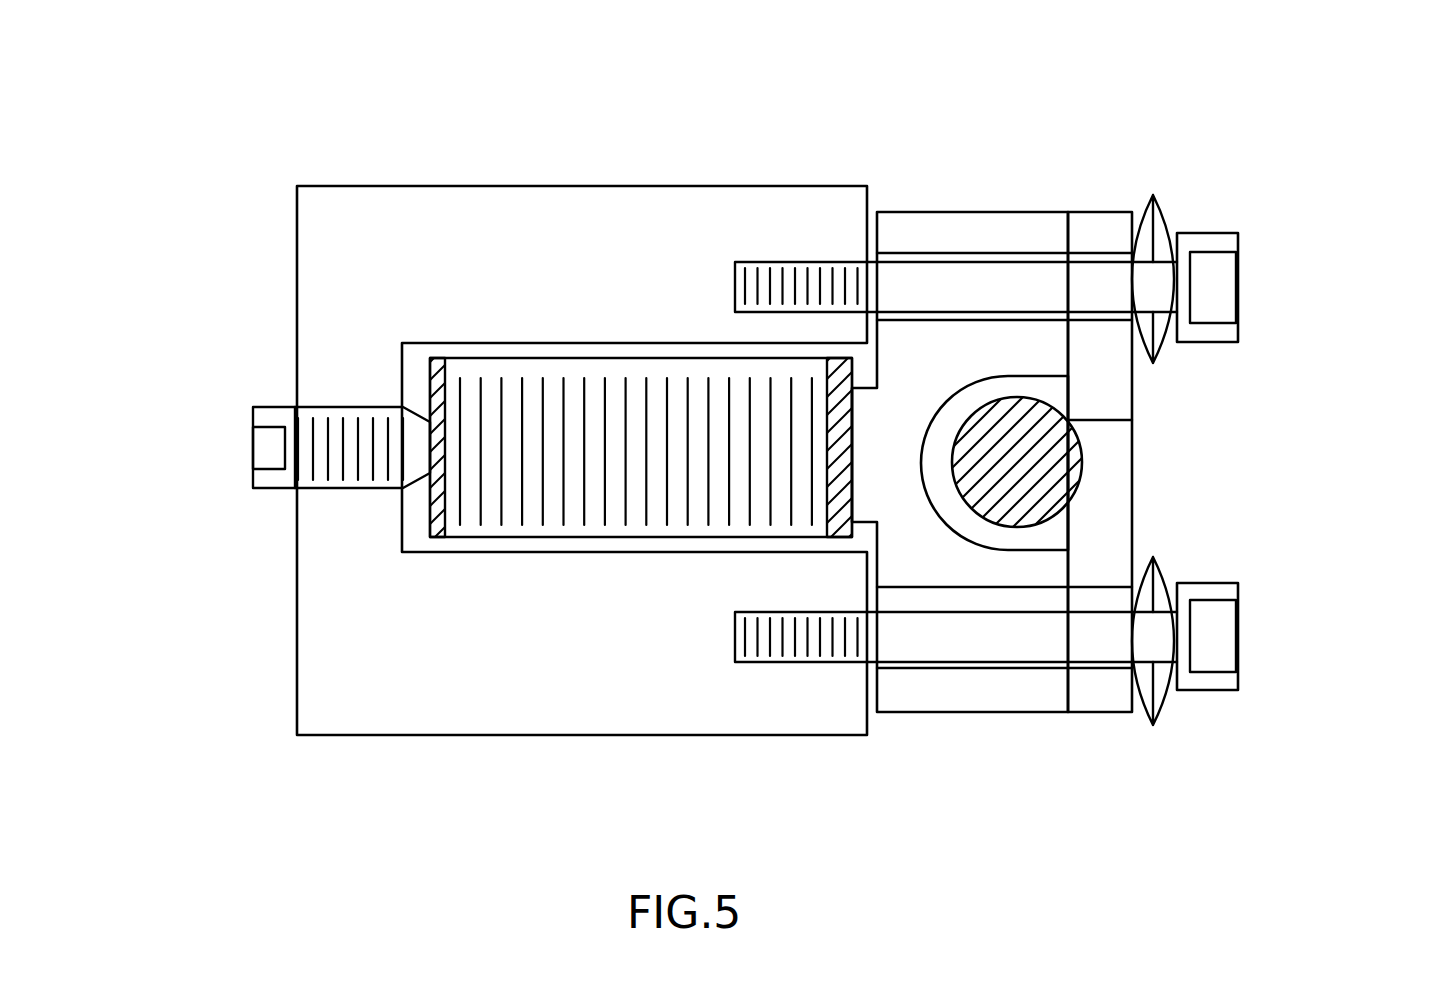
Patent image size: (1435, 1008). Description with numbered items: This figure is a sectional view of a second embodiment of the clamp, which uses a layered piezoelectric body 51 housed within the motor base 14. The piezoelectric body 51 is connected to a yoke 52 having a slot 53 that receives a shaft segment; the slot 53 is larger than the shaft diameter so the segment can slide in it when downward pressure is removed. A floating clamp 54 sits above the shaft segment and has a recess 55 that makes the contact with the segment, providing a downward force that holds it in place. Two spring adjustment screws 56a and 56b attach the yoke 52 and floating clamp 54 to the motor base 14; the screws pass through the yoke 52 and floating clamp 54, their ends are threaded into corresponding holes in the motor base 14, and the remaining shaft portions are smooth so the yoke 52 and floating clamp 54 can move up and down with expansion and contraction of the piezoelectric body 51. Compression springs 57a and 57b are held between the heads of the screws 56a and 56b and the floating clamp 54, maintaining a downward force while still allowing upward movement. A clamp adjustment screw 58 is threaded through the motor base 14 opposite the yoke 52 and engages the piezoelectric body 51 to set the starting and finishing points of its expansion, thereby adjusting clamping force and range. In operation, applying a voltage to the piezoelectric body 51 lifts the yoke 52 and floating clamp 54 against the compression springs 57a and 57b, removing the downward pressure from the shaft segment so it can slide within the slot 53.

The motor base 14 is at (376, 248).
The layered piezoelectric body 51 is at (512, 430).
The clamp adjustment screw 58 is at (256, 406).
The yoke 52 is at (977, 210).
The floating clamp 54 is at (1133, 404).
The recess 55 is at (1132, 420).
The slot 53 is at (966, 530).
The spring adjustment screw 56a is at (1240, 290).
The compression spring 57a is at (1143, 208).
The spring adjustment screw 56b is at (1240, 640).
The compression spring 57b is at (1168, 697).